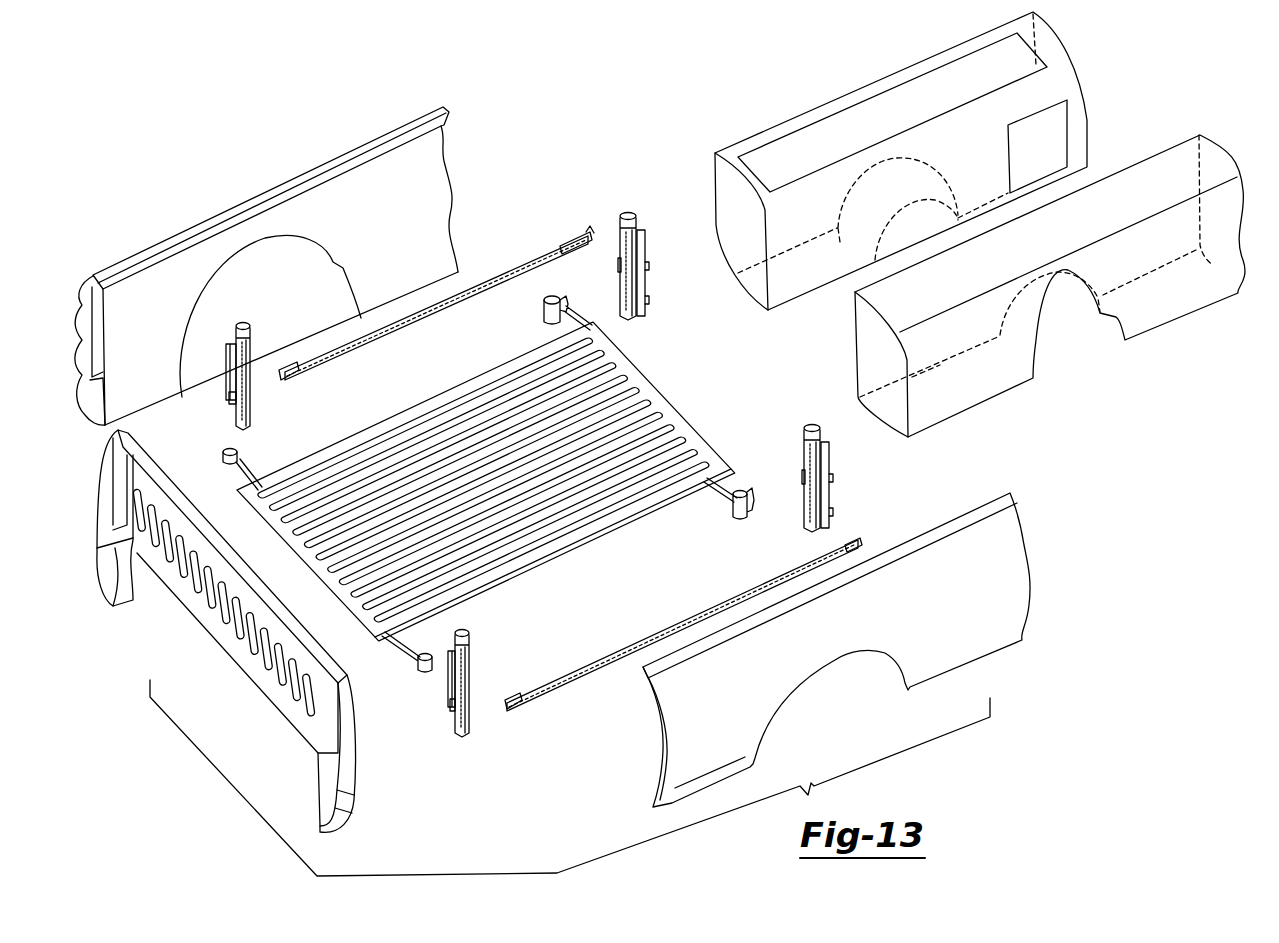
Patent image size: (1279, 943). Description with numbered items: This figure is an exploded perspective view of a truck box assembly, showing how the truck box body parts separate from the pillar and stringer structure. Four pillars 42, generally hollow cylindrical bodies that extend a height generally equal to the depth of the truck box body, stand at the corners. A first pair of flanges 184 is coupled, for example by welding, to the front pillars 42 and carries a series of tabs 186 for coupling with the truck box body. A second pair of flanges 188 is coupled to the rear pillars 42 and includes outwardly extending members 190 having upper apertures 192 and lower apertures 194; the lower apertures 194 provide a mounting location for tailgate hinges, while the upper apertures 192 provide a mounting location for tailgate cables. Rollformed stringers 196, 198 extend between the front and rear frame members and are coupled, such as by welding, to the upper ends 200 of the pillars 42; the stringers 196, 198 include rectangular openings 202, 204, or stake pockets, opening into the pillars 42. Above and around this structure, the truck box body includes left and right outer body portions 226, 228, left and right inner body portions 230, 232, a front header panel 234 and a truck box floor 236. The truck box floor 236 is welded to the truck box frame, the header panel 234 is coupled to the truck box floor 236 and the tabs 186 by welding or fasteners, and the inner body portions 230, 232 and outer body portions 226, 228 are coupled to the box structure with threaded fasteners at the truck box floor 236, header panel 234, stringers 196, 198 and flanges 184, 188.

The pillar 42 is at (250, 404).
The first pair of flanges 184 is at (234, 396).
The tabs 186 is at (222, 372).
The second pair of flanges 188 is at (618, 270).
The outwardly extending members 190 is at (650, 270).
The upper apertures 192 is at (646, 242).
The lower apertures 194 is at (650, 310).
The stringer 196 is at (641, 633).
The stringer 198 is at (482, 292).
The upper ends of pillars 200 is at (242, 322).
The rectangular opening 202 is at (516, 699).
The rectangular opening 204 is at (292, 372).
The left outer body portion 226 is at (948, 568).
The right outer body portion 228 is at (180, 242).
The left inner body portion 230 is at (972, 150).
The right inner body portion 232 is at (1150, 187).
The front header panel 234 is at (195, 595).
The truck box floor 236 is at (285, 508).